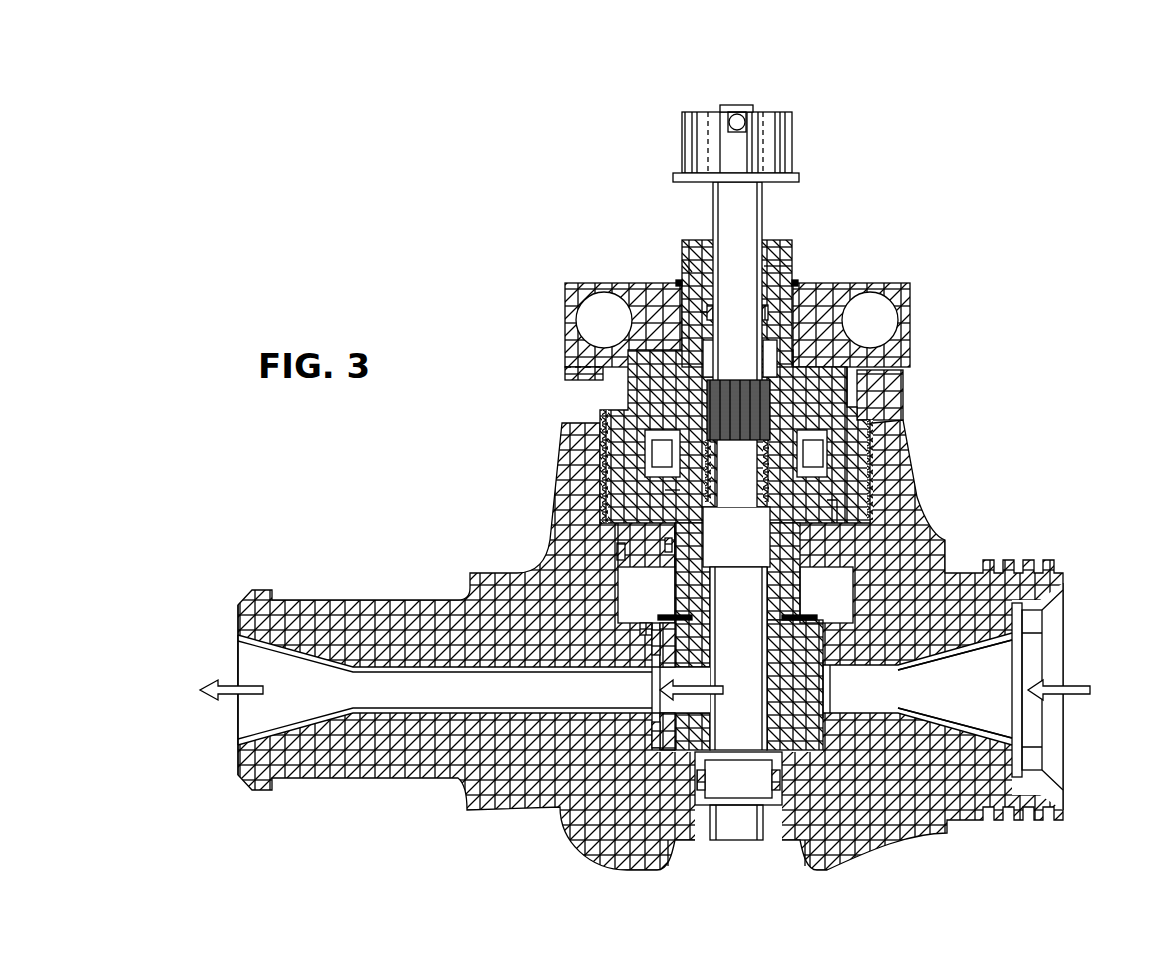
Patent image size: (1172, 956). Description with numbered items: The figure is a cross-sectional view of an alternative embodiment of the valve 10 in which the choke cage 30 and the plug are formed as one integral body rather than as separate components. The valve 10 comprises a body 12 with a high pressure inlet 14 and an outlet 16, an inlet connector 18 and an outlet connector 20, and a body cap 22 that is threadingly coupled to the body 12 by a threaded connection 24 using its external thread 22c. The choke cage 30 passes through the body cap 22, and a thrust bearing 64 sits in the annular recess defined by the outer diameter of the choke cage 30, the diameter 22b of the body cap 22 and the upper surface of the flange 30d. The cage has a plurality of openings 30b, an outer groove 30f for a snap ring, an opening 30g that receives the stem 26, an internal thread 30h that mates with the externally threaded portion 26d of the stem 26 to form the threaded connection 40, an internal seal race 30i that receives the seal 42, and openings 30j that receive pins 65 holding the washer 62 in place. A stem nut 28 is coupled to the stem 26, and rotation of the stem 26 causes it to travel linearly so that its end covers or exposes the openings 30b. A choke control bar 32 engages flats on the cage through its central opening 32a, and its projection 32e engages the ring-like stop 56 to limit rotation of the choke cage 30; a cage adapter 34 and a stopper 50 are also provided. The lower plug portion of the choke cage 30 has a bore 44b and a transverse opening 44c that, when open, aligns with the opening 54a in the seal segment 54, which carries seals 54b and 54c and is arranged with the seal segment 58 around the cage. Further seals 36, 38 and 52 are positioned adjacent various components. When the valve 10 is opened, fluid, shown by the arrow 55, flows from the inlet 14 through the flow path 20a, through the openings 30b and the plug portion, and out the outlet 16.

The valve 10 is at (524, 318).
The body 12 is at (405, 768).
The inlet 14 is at (1066, 662).
The outlet 16 is at (234, 660).
The inlet connector 18 is at (1020, 560).
The outlet connector 20 is at (255, 787).
The flow path 20a is at (863, 650).
The body cap 22 is at (914, 447).
The second bore 22b is at (827, 505).
The external thread 22c is at (873, 465).
The threaded connection 24 is at (604, 476).
The stem 26 is at (806, 344).
The externally threaded portion 26d is at (770, 418).
The stem nut 28 is at (793, 143).
The choke cage 30 is at (733, 518).
The openings 30b is at (737, 570).
The flange 30d is at (665, 494).
The groove 30f is at (692, 272).
The opening 30g is at (764, 266).
The internal thread 30h is at (770, 492).
The internal seal race 30i is at (707, 312).
The openings 30j is at (837, 650).
The choke control bar 32 is at (736, 313).
The central opening 32a is at (898, 320).
The projection 32e is at (568, 372).
The cage adapter 34 is at (617, 553).
The seal 36 is at (622, 556).
The seal 38 is at (667, 541).
The threaded connection 40 is at (702, 405).
The seal 42 is at (766, 313).
The bore 44b is at (765, 692).
The opening 44c is at (712, 700).
The stopper 50 is at (738, 795).
The seal 52 is at (782, 778).
The seal segment 54 is at (613, 768).
The opening 54a is at (660, 705).
The seal 54b is at (656, 740).
The seal 54c is at (650, 750).
The arrow 55 is at (232, 693).
The ring-like stop 56 is at (903, 380).
The seal segment 58 is at (827, 702).
The washer 62 is at (645, 628).
The thrust bearing 64 is at (639, 447).
The pins 65 is at (655, 617).